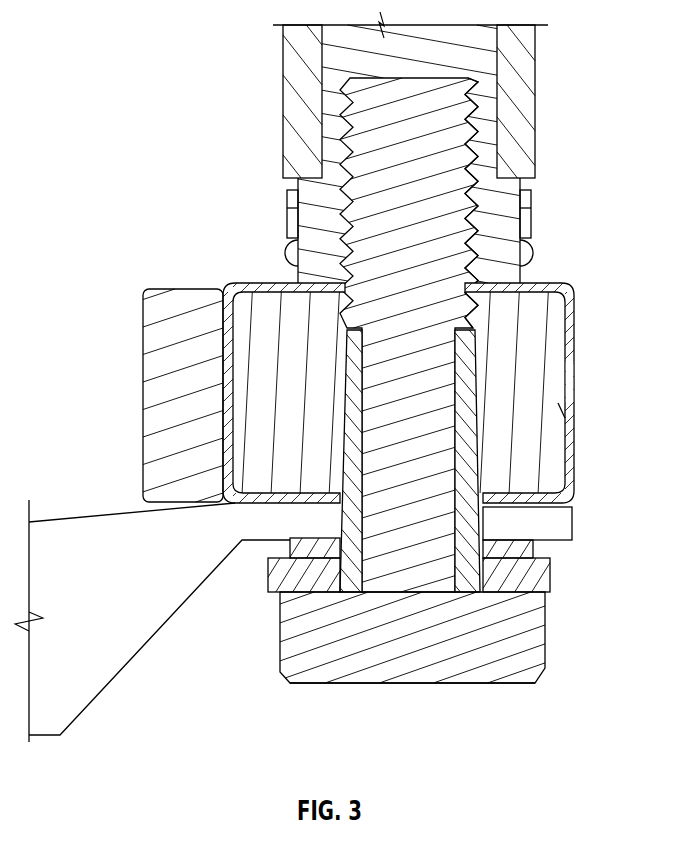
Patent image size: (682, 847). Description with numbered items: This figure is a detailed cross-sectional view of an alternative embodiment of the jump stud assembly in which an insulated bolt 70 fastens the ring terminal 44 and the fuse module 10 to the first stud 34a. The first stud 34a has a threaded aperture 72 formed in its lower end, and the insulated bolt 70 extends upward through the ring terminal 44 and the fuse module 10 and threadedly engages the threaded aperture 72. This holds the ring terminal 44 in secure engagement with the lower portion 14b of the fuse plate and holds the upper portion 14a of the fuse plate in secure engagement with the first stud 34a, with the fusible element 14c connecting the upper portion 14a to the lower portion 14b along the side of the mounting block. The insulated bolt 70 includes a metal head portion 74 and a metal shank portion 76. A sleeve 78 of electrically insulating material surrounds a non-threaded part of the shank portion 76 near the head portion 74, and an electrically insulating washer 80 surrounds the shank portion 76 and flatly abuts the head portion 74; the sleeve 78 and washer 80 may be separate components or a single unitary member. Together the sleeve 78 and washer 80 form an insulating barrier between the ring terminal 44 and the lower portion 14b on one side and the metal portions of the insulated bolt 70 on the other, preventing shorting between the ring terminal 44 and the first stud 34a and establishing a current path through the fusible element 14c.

The fuse module 10 is at (118, 273).
The upper portion 14a is at (271, 289).
The lower portion 14b is at (226, 500).
The fusible element 14c is at (225, 418).
The first stud 34a is at (503, 262).
The ring terminal 44 is at (553, 522).
The insulated bolt 70 is at (445, 685).
The threaded aperture 72 is at (482, 232).
The head portion 74 is at (518, 652).
The shank portion 76 is at (440, 160).
The sleeve 78 is at (468, 447).
The washer 80 is at (518, 552).